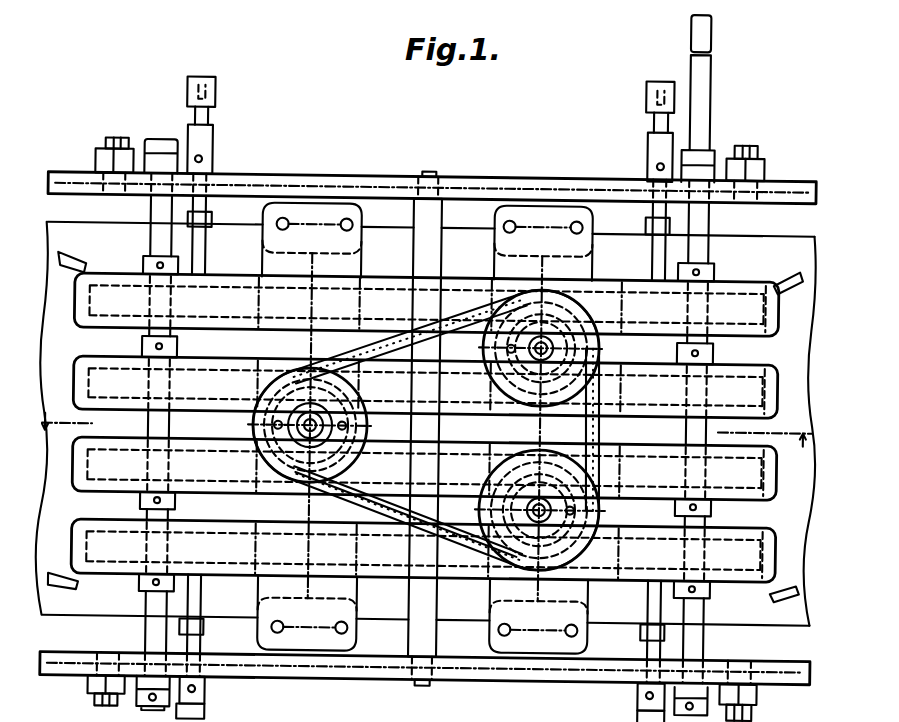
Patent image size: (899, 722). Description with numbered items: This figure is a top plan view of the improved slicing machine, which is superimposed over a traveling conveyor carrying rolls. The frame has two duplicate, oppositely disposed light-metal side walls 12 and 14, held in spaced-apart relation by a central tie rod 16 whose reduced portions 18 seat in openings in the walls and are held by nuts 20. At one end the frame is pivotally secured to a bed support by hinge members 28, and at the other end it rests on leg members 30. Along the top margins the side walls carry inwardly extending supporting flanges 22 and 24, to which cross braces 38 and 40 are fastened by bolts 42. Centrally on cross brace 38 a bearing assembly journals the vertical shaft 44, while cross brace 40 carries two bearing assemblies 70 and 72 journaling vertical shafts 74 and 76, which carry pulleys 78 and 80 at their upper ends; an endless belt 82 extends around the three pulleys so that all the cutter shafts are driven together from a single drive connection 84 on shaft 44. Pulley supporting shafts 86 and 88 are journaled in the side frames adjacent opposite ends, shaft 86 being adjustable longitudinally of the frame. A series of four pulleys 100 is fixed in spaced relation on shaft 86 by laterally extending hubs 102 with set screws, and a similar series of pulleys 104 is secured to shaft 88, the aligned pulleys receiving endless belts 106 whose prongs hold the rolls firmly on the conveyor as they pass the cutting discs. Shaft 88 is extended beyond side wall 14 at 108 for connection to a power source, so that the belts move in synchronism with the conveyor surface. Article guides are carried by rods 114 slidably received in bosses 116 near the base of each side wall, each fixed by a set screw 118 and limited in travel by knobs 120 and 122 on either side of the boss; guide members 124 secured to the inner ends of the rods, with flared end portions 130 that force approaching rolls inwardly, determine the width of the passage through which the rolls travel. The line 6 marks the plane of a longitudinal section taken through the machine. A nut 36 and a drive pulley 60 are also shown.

The section line 6 is at (424, 445).
The side wall 12 is at (92, 682).
The side wall 14 is at (55, 178).
The central tie rod 16 is at (411, 234).
The reduced portion 18 is at (440, 186).
The nut 20 is at (432, 176).
The supporting flange 22 is at (274, 204).
The supporting flange 24 is at (586, 206).
The hinge member 28 is at (98, 155).
The leg member 30 is at (762, 170).
The nut 36 is at (106, 142).
The cross brace 38 is at (352, 268).
The cross brace 40 is at (494, 267).
The bolt 42 is at (283, 221).
The shaft 44 is at (306, 440).
The drive pulley 60 is at (287, 446).
The bearing assembly 70 is at (573, 330).
The bearing assembly 72 is at (568, 536).
The vertical shaft 74 is at (548, 348).
The vertical shaft 76 is at (530, 512).
The pulley 78 is at (500, 313).
The pulley 80 is at (497, 490).
The endless belt 82 is at (490, 547).
The drive connection 84 is at (302, 426).
The pulley supporting shaft 86 is at (156, 612).
The pulley shaft 88 is at (706, 652).
The pulley 100 is at (100, 310).
The hub 102 is at (150, 264).
The pulley 104 is at (766, 332).
The endless belt 106 is at (82, 310).
The extended portion of shaft 108 is at (702, 50).
The rod 114 is at (203, 244).
The boss 116 is at (209, 152).
The set screw 118 is at (199, 162).
The knob 120 is at (209, 96).
The knob 122 is at (207, 224).
The guide member 124 is at (149, 420).
The flared end portion 130 is at (792, 273).